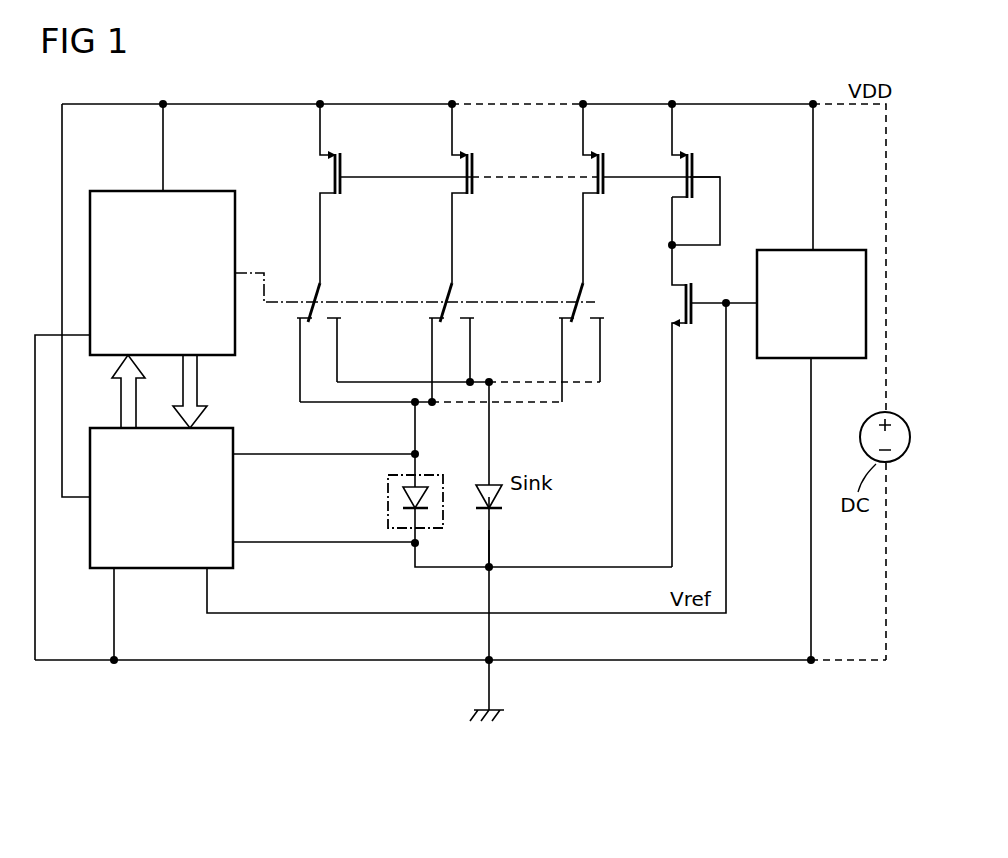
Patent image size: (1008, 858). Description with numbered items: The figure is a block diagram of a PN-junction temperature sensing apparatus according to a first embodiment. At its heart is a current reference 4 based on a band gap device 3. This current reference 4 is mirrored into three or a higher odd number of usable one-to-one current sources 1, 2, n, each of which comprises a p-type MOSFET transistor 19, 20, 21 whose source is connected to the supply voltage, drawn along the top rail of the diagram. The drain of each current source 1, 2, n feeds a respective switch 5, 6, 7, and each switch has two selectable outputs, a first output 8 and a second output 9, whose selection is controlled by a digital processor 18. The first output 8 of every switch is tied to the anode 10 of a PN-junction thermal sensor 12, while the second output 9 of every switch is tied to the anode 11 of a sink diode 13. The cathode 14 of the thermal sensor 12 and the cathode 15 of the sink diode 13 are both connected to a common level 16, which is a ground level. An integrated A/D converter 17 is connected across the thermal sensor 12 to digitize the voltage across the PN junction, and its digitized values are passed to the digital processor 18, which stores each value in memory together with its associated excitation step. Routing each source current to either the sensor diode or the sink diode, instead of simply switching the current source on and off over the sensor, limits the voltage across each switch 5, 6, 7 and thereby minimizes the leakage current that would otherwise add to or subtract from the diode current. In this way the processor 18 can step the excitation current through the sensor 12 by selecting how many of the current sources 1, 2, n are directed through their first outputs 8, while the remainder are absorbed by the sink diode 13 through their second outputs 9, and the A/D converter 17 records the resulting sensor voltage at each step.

The current source 1 is at (330, 219).
The current source 2 is at (462, 219).
The band gap device 3 is at (842, 250).
The current reference 4 is at (695, 171).
The switch 5 is at (317, 291).
The switch 6 is at (449, 291).
The switch 7 is at (580, 291).
The first output 8 is at (297, 318).
The second output 9 is at (341, 318).
The anode of PN-junction thermal sensor 10 is at (417, 476).
The anode of sink diode 11 is at (490, 482).
The thermal sensor 12 is at (388, 503).
The sink diode 13 is at (498, 498).
The cathode of thermal sensor 14 is at (412, 556).
The cathode of sink diode 15 is at (492, 540).
The ground level 16 is at (490, 690).
The A/D converter 17 is at (157, 570).
The digital processor 18 is at (190, 191).
The p-type MOSFET transistor 19 is at (356, 193).
The p-type MOSFET transistor 20 is at (488, 193).
The p-type MOSFET transistor 21 is at (606, 171).